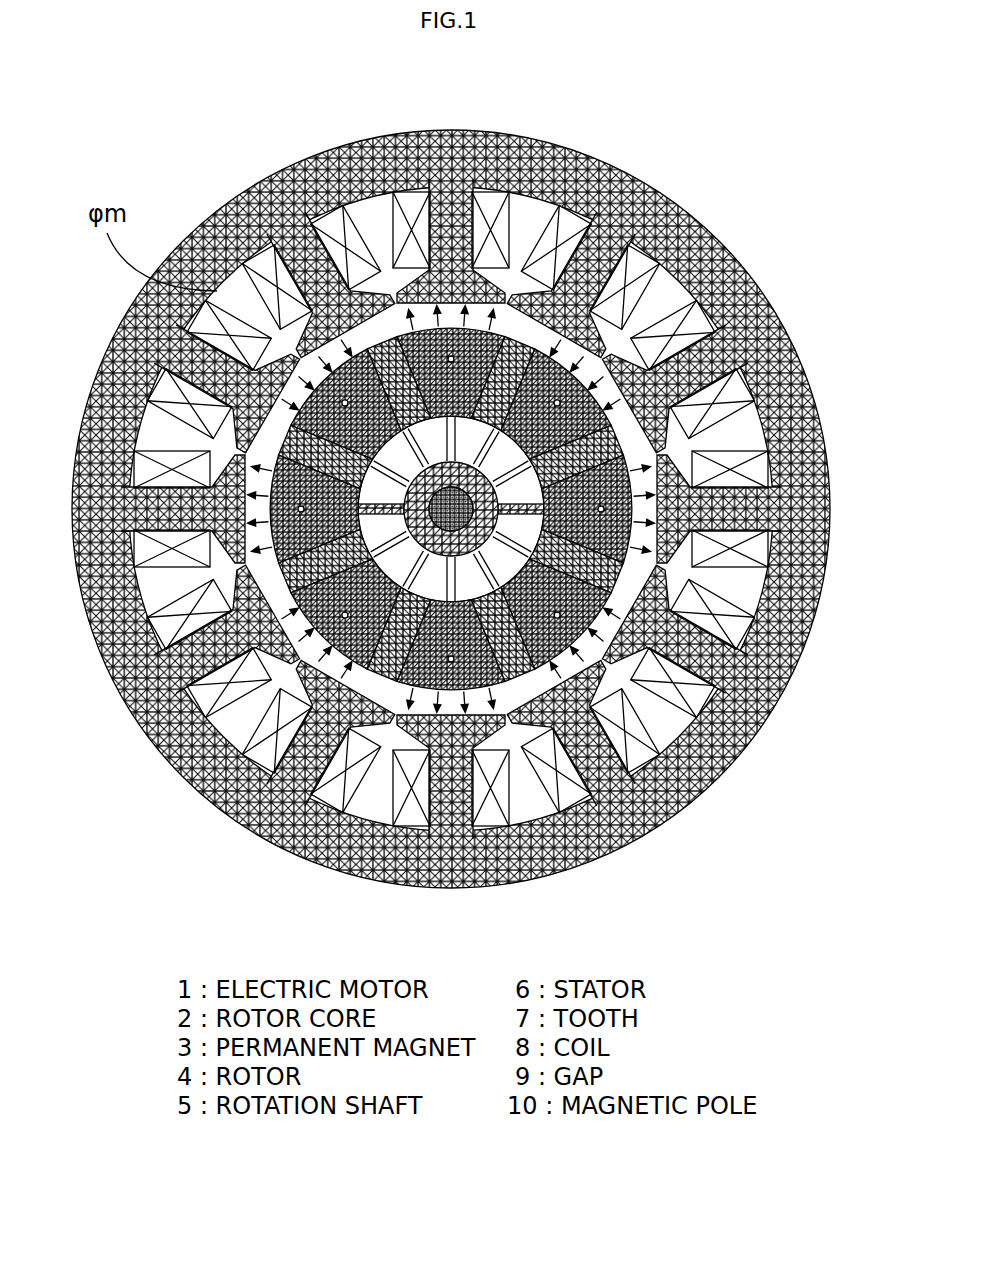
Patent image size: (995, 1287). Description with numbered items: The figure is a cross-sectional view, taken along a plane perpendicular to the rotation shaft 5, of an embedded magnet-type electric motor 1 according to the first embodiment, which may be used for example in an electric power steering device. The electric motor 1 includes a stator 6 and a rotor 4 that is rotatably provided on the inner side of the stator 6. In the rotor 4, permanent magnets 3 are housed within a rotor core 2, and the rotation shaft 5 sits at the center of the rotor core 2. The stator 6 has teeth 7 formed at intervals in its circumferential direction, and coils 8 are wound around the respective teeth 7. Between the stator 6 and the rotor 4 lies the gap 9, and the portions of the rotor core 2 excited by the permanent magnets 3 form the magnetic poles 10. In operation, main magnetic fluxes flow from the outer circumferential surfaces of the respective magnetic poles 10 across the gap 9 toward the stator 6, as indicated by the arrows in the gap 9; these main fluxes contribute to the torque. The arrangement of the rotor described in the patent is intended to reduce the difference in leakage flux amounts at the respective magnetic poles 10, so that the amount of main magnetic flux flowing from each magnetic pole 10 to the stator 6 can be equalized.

The electric motor 1 is at (84, 106).
The rotor core 2 is at (577, 378).
The permanent magnet 3 is at (607, 432).
The rotor 4 is at (810, 230).
The rotation shaft 5 is at (633, 460).
The stator 6 is at (110, 775).
The tooth 7 is at (203, 717).
The coil 8 is at (250, 727).
The gap 9 is at (597, 381).
The magnetic pole 10 is at (270, 545).